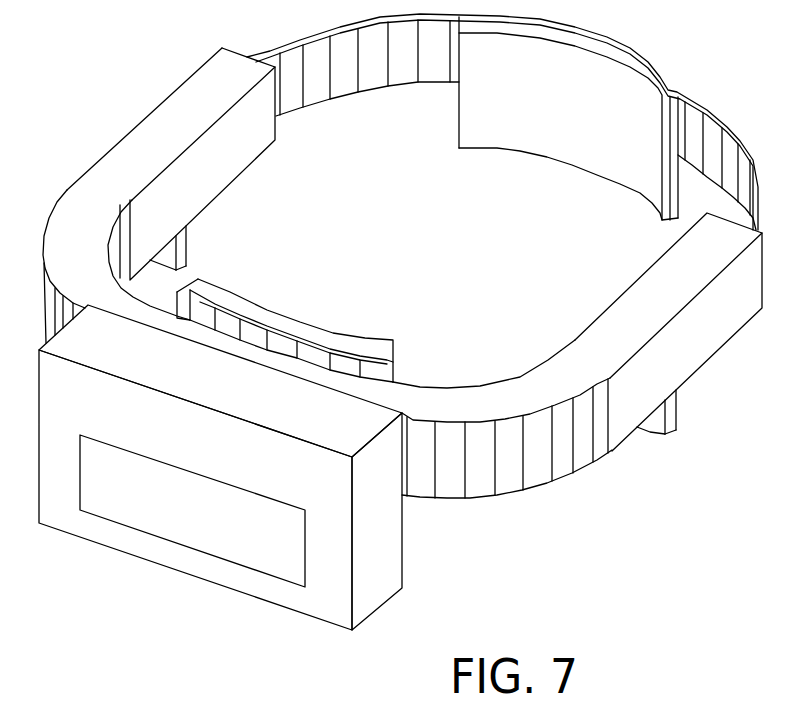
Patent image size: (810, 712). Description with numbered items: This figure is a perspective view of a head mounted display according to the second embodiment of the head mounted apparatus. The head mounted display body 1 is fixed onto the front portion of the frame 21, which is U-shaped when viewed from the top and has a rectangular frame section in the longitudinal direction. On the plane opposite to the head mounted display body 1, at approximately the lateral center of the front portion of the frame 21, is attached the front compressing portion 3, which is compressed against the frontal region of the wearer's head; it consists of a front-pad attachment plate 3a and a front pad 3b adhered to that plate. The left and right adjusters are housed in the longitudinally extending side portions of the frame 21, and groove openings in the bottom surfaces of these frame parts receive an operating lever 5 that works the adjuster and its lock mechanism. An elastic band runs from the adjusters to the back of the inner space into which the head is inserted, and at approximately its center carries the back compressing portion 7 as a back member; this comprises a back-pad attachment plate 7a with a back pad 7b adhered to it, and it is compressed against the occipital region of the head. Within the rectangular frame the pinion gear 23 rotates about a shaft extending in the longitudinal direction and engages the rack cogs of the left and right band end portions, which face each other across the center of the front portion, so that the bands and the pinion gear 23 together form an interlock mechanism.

The head mounted display body 1 is at (57, 505).
The frame 21 is at (103, 190).
The pinion gear 23 is at (327, 63).
The front compressing portion 3 is at (285, 314).
The front-pad attachment plate 3a is at (183, 303).
The front pad 3b is at (255, 318).
The operating lever 5 is at (668, 434).
The back compressing portion 7 is at (624, 116).
The back-pad attachment plate 7a is at (613, 40).
The back pad 7b is at (625, 73).